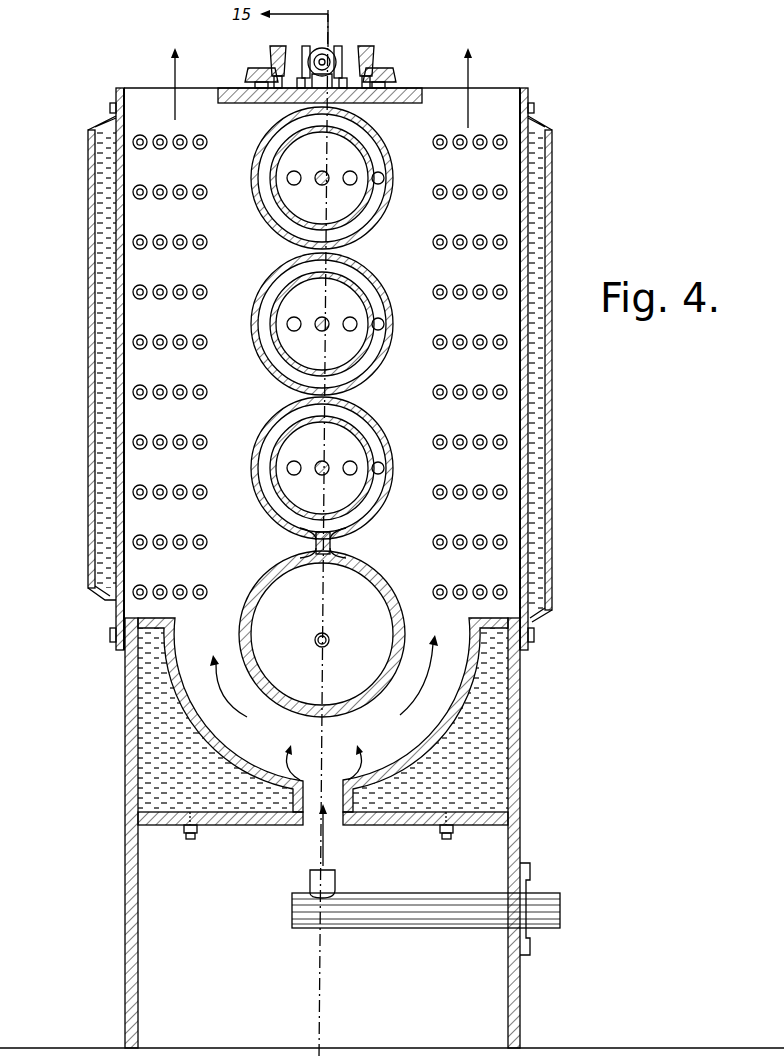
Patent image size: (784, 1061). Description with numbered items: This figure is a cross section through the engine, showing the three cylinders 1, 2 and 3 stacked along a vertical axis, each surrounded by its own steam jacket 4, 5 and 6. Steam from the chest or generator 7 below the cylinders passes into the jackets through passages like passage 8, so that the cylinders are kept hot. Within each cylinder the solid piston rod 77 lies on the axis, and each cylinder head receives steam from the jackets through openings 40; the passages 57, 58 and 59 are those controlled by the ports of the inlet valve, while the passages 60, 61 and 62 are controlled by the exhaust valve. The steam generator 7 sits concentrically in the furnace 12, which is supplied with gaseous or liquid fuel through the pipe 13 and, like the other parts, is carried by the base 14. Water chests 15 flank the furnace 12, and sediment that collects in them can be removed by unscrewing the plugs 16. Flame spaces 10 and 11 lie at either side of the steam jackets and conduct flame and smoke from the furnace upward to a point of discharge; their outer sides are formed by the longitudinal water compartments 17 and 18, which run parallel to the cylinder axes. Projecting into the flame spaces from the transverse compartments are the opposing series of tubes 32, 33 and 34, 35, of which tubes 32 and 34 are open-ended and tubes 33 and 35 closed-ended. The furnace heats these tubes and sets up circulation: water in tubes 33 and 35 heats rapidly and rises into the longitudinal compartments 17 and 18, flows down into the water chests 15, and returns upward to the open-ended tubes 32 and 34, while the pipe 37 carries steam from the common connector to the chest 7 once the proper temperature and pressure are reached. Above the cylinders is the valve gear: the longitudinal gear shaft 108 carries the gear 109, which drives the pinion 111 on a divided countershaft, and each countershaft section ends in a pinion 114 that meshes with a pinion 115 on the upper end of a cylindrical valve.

The cylinder 1 is at (300, 217).
The cylinder 2 is at (300, 366).
The cylinder 3 is at (296, 507).
The steam jacket 4 is at (280, 210).
The steam jacket 5 is at (274, 360).
The steam jacket 6 is at (270, 505).
The steam chest or generator 7 is at (277, 637).
The passage 8 is at (318, 560).
The flame space 10 is at (122, 270).
The flame space 11 is at (497, 216).
The furnace 12 is at (200, 727).
The pipe 13 is at (410, 893).
The base 14 is at (125, 932).
The water chest 15 is at (160, 785).
The plug 16 is at (180, 840).
The longitudinal water compartment 17 is at (546, 415).
The longitudinal water compartment 18 is at (92, 389).
The tube 32 is at (178, 250).
The tube 33 is at (142, 198).
The tube 34 is at (478, 292).
The tube 35 is at (450, 263).
The pipe 37 is at (318, 650).
The opening 40 is at (384, 177).
The passage 57 is at (355, 173).
The passage 58 is at (355, 319).
The passage 59 is at (355, 463).
The passage 60 is at (287, 178).
The passage 61 is at (287, 324).
The passage 62 is at (287, 468).
The piston rod 77 is at (326, 173).
The longitudinal gear shaft 108 is at (292, 103).
The gear 109 is at (326, 48).
The pinion 111 is at (307, 46).
The pinion 114 is at (277, 46).
The pinion 115 is at (258, 58).